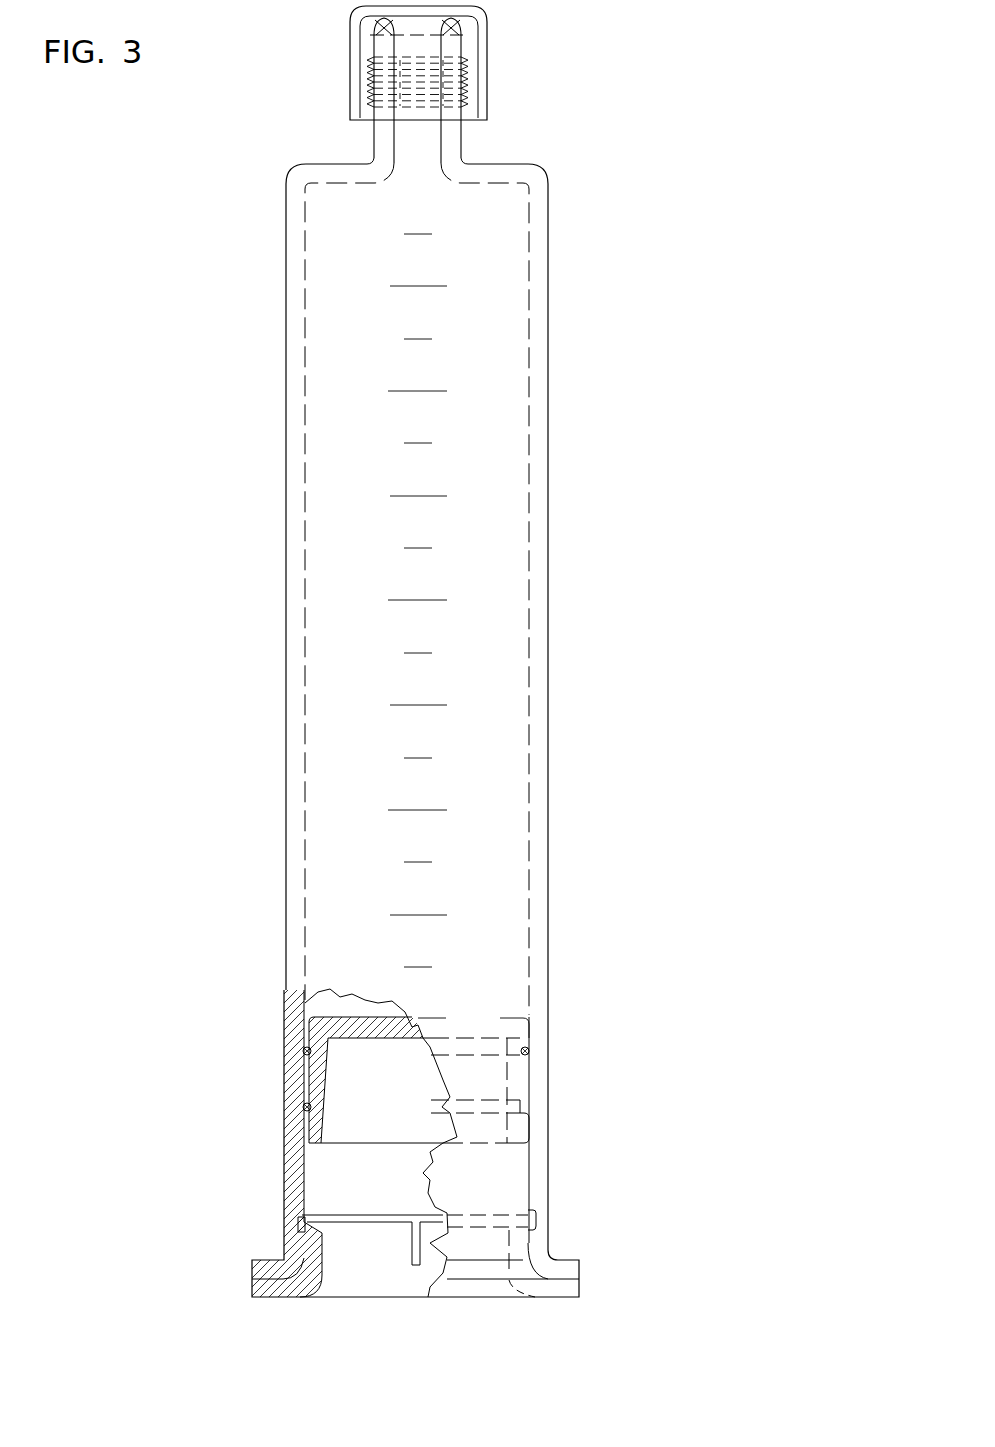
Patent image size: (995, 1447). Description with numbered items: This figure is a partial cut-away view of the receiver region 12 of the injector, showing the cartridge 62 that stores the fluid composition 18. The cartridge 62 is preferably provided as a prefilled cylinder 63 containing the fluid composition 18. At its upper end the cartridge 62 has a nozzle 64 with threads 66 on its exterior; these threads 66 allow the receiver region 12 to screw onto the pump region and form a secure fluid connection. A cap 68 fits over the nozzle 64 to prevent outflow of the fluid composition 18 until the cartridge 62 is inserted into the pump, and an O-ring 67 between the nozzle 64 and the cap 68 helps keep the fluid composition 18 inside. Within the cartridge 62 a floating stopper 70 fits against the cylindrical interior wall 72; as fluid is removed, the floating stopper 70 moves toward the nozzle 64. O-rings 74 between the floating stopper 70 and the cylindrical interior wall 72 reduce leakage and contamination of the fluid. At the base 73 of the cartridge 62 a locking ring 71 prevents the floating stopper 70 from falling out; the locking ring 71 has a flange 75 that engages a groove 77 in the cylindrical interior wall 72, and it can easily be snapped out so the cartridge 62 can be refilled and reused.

The receiver region 12 is at (608, 290).
The fluid composition 18 is at (485, 500).
The cartridge 62 is at (540, 393).
The prefilled cylinder 63 is at (538, 606).
The nozzle 64 is at (453, 142).
The threads 66 is at (463, 83).
The O-ring 67 is at (457, 24).
The cap 68 is at (468, 45).
The floating stopper 70 is at (317, 1032).
The locking ring 71 is at (310, 1257).
The cylindrical interior wall 72 is at (529, 703).
The base 73 is at (538, 1243).
The O-rings 74 is at (308, 1050).
The flange 75 is at (297, 1220).
The groove 77 is at (302, 1213).